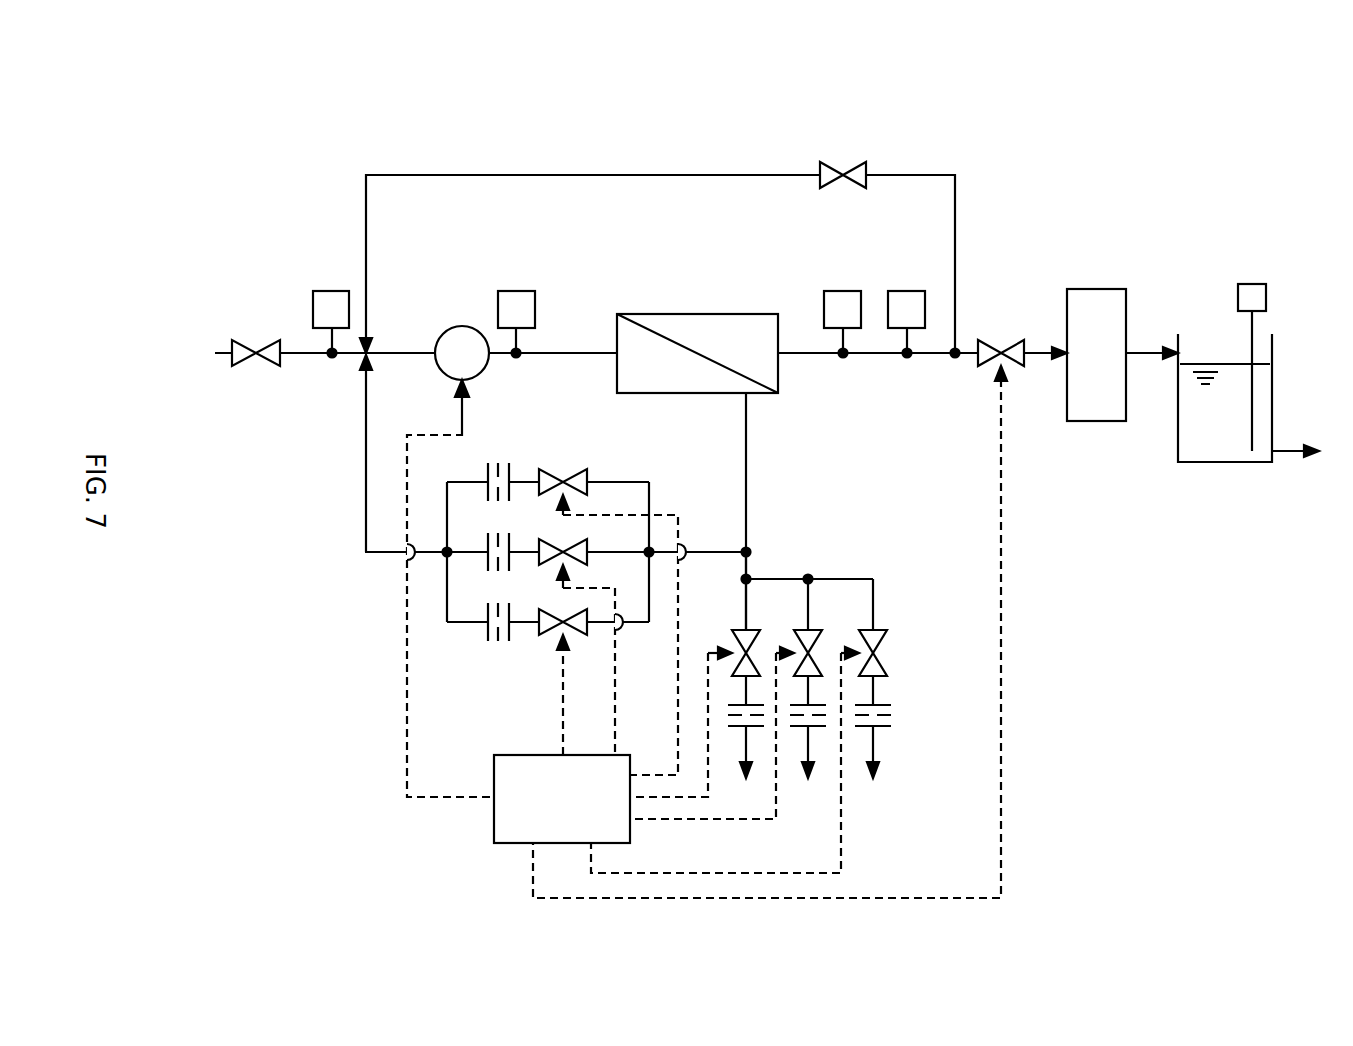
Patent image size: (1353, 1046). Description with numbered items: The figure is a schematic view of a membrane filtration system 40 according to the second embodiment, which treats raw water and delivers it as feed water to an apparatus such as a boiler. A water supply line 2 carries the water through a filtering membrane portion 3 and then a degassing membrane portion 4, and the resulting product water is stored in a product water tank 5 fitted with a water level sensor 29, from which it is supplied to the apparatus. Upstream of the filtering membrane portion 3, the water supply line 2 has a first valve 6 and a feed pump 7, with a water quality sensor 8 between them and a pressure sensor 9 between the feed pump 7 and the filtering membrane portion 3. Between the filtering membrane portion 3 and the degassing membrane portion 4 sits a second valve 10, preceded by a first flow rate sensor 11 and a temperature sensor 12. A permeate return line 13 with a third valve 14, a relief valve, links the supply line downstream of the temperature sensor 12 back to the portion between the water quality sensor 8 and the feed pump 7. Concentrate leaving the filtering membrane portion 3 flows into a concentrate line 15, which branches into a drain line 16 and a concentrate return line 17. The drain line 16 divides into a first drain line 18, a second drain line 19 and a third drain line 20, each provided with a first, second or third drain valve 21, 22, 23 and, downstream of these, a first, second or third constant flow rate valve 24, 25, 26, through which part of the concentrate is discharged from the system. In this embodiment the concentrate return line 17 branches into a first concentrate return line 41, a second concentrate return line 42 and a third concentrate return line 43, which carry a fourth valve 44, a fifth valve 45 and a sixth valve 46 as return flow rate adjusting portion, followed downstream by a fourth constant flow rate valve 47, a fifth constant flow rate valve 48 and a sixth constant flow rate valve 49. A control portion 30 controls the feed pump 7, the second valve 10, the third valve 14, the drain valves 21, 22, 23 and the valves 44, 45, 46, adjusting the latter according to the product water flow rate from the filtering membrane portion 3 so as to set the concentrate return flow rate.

The water supply line 2 is at (557, 353).
The filtering membrane portion 3 is at (722, 314).
The degassing membrane portion 4 is at (1095, 421).
The product water tank 5 is at (1225, 462).
The first valve 6 is at (258, 340).
The feed pump 7 is at (445, 333).
The water quality sensor 8 is at (332, 291).
The pressure sensor 9 is at (512, 291).
The second valve 10 is at (1010, 348).
The first flow rate sensor 11 is at (855, 291).
The temperature sensor 12 is at (907, 291).
The permeate return line 13 is at (956, 224).
The third valve 14 is at (852, 170).
The concentrate line 15 is at (765, 475).
The drain line 16 is at (748, 565).
The concentrate return line 17 is at (385, 556).
The first drain line 18 is at (746, 615).
The second drain line 19 is at (812, 600).
The third drain line 20 is at (874, 600).
The first drain valve 21 is at (753, 650).
The second drain valve 22 is at (815, 650).
The third drain valve 23 is at (880, 662).
The first constant flow rate valve 24 is at (737, 728).
The second constant flow rate valve 25 is at (800, 728).
The third constant flow rate valve 26 is at (878, 728).
The water level sensor 29 is at (1253, 284).
The control portion 30 is at (522, 843).
The membrane filtration system 40 is at (995, 165).
The first concentrate return line 41 is at (610, 482).
The second concentrate return line 42 is at (625, 552).
The third concentrate return line 43 is at (632, 622).
The fourth valve 44 is at (566, 468).
The fifth valve 45 is at (553, 570).
The sixth valve 46 is at (572, 640).
The fourth constant flow rate valve 47 is at (488, 462).
The fifth constant flow rate valve 48 is at (509, 540).
The sixth constant flow rate valve 49 is at (488, 638).